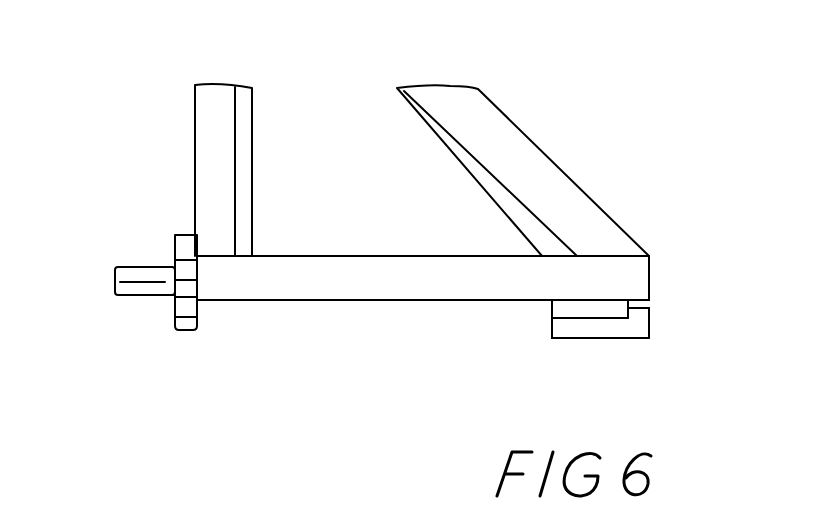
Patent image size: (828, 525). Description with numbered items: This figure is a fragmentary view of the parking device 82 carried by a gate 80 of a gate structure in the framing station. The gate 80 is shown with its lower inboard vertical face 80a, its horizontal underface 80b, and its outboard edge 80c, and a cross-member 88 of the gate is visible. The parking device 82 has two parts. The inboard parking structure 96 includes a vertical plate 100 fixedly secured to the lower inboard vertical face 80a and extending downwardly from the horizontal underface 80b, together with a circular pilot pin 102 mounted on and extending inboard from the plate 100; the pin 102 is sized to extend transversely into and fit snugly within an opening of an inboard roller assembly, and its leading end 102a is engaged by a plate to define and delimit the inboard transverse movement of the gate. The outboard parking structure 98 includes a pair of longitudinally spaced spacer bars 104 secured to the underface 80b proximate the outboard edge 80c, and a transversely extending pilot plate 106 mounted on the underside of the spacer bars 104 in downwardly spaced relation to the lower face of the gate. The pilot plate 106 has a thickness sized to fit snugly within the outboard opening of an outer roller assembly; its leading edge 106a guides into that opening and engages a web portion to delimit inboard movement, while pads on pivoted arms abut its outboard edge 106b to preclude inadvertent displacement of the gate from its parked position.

The gate 80 is at (517, 130).
The lower inboard vertical face 80a is at (205, 103).
The horizontal underface 80b is at (332, 302).
The outboard edge 80c is at (652, 283).
The parking device 82 is at (203, 322).
The cross-members 88 is at (293, 265).
The inboard parking structure 96 is at (150, 297).
The outboard parking structure 98 is at (565, 367).
The vertical plate 100 is at (177, 235).
The circular pilot pin 102 is at (133, 266).
The leading end 102a is at (116, 285).
The spacer bars 104 is at (597, 312).
The pilot plate 106 is at (603, 338).
The leading edge 106a is at (550, 330).
The outboard edge 106b is at (650, 320).